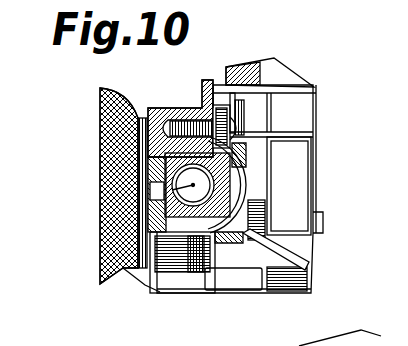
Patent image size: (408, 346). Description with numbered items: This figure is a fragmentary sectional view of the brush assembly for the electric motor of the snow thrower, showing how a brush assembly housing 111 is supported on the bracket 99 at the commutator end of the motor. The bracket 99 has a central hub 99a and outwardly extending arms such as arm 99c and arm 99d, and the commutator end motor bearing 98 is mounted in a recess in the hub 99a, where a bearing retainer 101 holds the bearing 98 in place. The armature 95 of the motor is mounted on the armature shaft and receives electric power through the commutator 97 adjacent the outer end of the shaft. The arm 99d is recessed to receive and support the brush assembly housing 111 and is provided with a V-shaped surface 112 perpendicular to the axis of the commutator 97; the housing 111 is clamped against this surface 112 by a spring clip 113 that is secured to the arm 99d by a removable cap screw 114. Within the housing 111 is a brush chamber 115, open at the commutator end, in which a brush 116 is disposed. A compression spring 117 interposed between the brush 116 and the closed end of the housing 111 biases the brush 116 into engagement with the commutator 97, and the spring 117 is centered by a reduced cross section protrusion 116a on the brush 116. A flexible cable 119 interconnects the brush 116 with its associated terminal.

The armature 95 is at (100, 103).
The reduced cross section protrusion 116a is at (145, 285).
The outwardly extending arm 99d is at (185, 108).
The cap screw 114 is at (240, 108).
The V-shaped surface 112 is at (162, 170).
The flexible cable 119 is at (168, 193).
The compression spring 117 is at (230, 201).
The brush 116 is at (214, 183).
The brush chamber 115 is at (232, 162).
The spring clip 113 is at (245, 135).
The bracket 99 is at (313, 92).
The outwardly extending arm 99c is at (268, 70).
The central hub 99a is at (300, 140).
The bearing retainer 101 is at (263, 223).
The commutator end motor bearing 98 is at (246, 240).
The commutator 97 is at (160, 292).
The brush assembly housing 111 is at (186, 258).